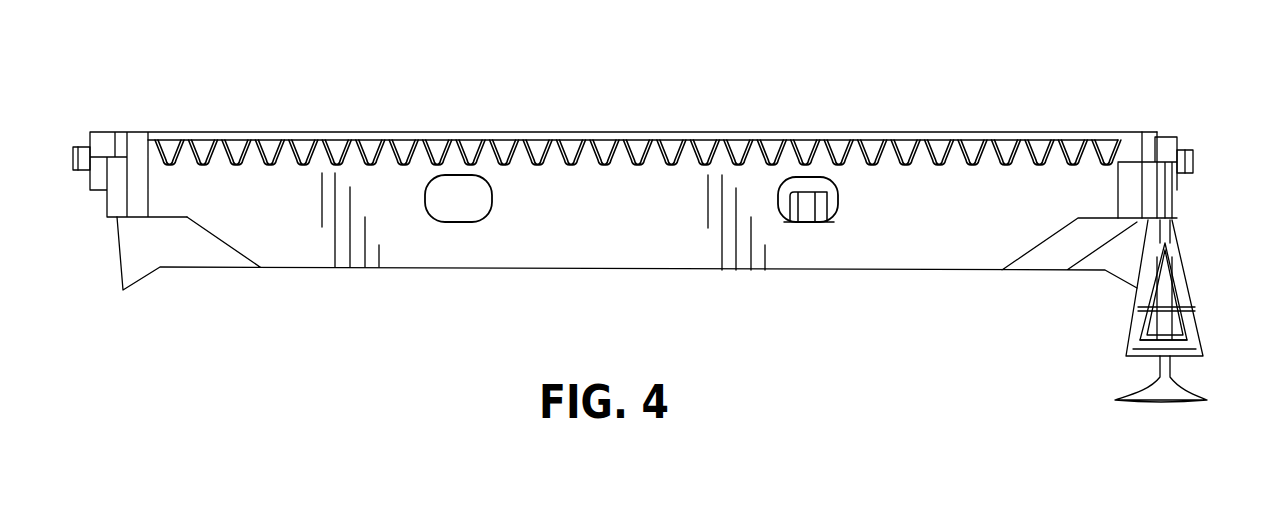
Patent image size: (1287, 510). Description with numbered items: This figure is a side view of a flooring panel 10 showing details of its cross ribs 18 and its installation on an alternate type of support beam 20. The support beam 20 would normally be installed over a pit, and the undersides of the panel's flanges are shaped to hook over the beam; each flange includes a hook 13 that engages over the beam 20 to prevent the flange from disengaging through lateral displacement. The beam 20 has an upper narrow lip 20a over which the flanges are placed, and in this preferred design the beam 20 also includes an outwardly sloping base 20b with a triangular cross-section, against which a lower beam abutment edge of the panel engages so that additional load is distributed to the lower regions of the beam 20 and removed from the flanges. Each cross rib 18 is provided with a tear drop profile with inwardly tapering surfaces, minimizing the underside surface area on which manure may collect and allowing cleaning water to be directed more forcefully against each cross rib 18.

The flooring panel 10 is at (624, 92).
The cross rib 18 is at (283, 132).
The hook 13 is at (1173, 190).
The support beam 20 is at (1184, 303).
The upper narrow lip 20a is at (1173, 205).
The outwardly sloping base 20b is at (1183, 272).